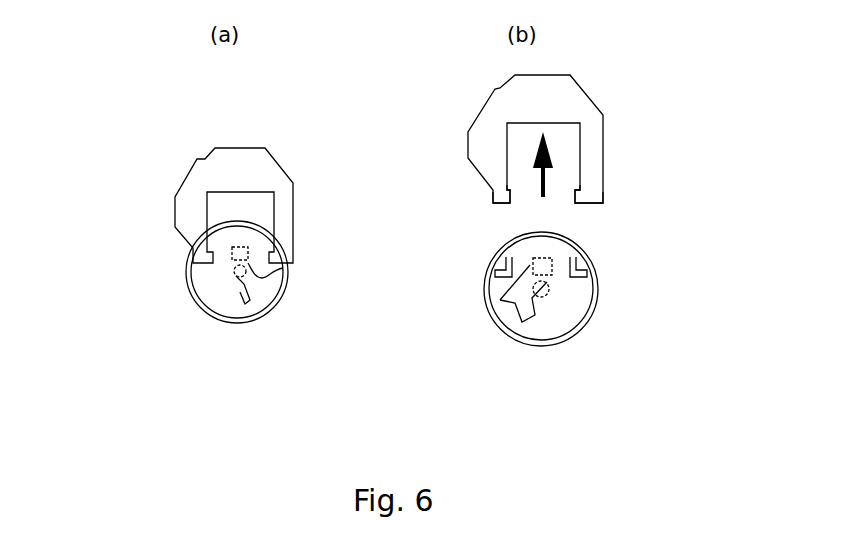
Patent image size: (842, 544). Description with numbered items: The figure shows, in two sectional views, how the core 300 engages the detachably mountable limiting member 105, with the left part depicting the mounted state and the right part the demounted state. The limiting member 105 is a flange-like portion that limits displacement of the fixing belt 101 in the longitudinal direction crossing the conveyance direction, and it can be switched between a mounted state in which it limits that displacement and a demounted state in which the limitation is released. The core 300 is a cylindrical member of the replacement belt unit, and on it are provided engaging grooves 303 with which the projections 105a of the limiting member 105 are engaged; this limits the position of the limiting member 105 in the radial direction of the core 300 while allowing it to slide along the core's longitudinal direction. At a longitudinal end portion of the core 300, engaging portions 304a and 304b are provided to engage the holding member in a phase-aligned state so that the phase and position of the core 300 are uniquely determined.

The limiting member 105 is at (190, 192).
The projections 105a is at (497, 200).
The fixing belt 101 is at (187, 267).
The core 300 is at (218, 292).
The engaging groove 303 is at (500, 258).
The engaging portion 304a is at (213, 292).
The engaging portion 304b is at (253, 287).